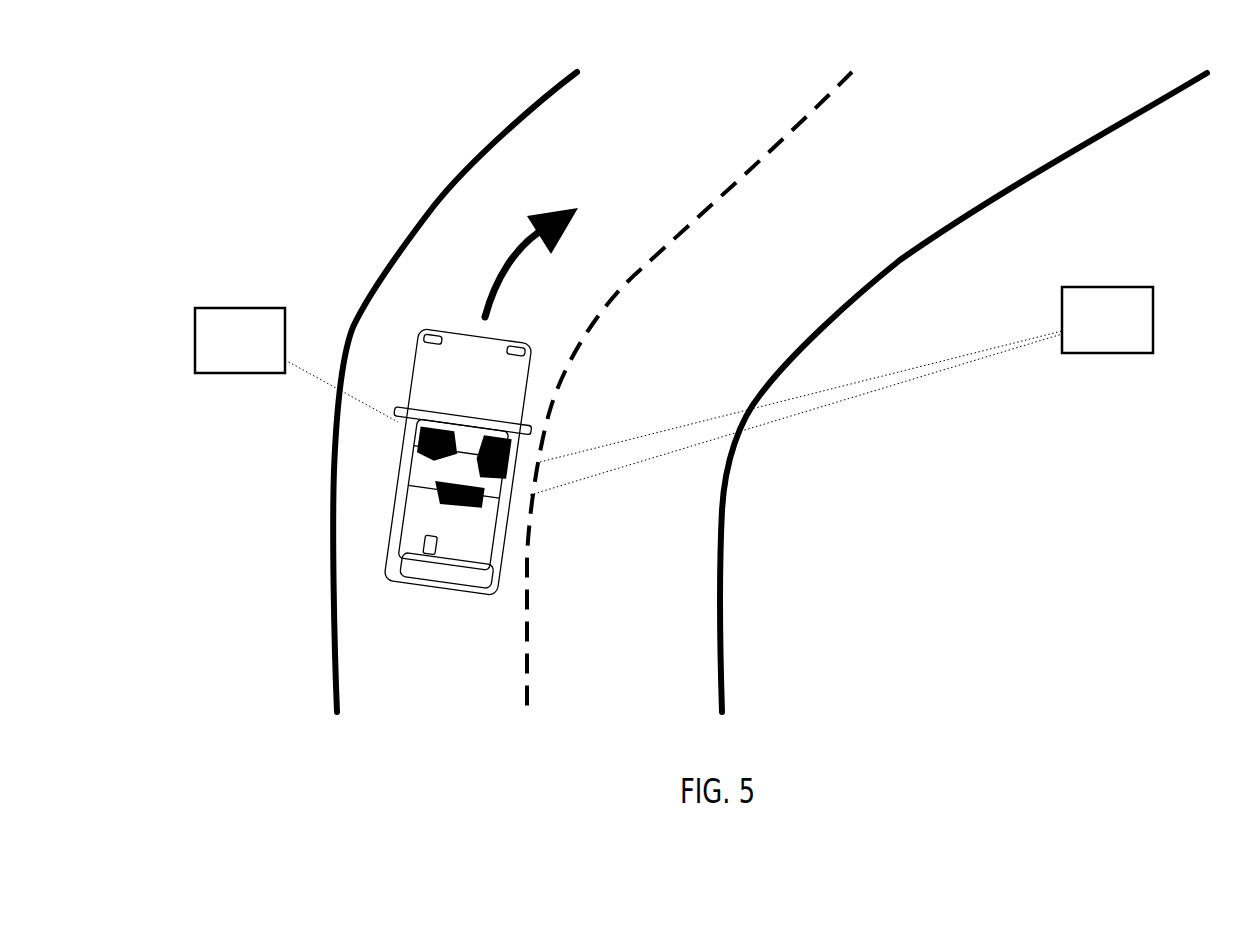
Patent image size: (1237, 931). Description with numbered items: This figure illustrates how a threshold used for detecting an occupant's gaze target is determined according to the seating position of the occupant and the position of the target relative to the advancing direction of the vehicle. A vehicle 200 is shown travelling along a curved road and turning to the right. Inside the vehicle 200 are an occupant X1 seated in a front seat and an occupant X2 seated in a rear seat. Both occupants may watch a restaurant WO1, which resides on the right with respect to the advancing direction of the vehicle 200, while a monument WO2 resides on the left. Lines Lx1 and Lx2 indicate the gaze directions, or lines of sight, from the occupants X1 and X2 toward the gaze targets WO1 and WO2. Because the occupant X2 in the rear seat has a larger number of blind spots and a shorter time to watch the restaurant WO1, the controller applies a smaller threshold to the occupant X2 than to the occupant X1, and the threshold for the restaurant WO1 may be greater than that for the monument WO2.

The vehicle 200 is at (387, 562).
The restaurant WO1 is at (1133, 290).
The monument WO2 is at (222, 307).
The first distance line Lx1 is at (312, 383).
The second distance line Lx2 is at (787, 417).
The occupant X1 is at (482, 485).
The occupant X2 is at (427, 533).